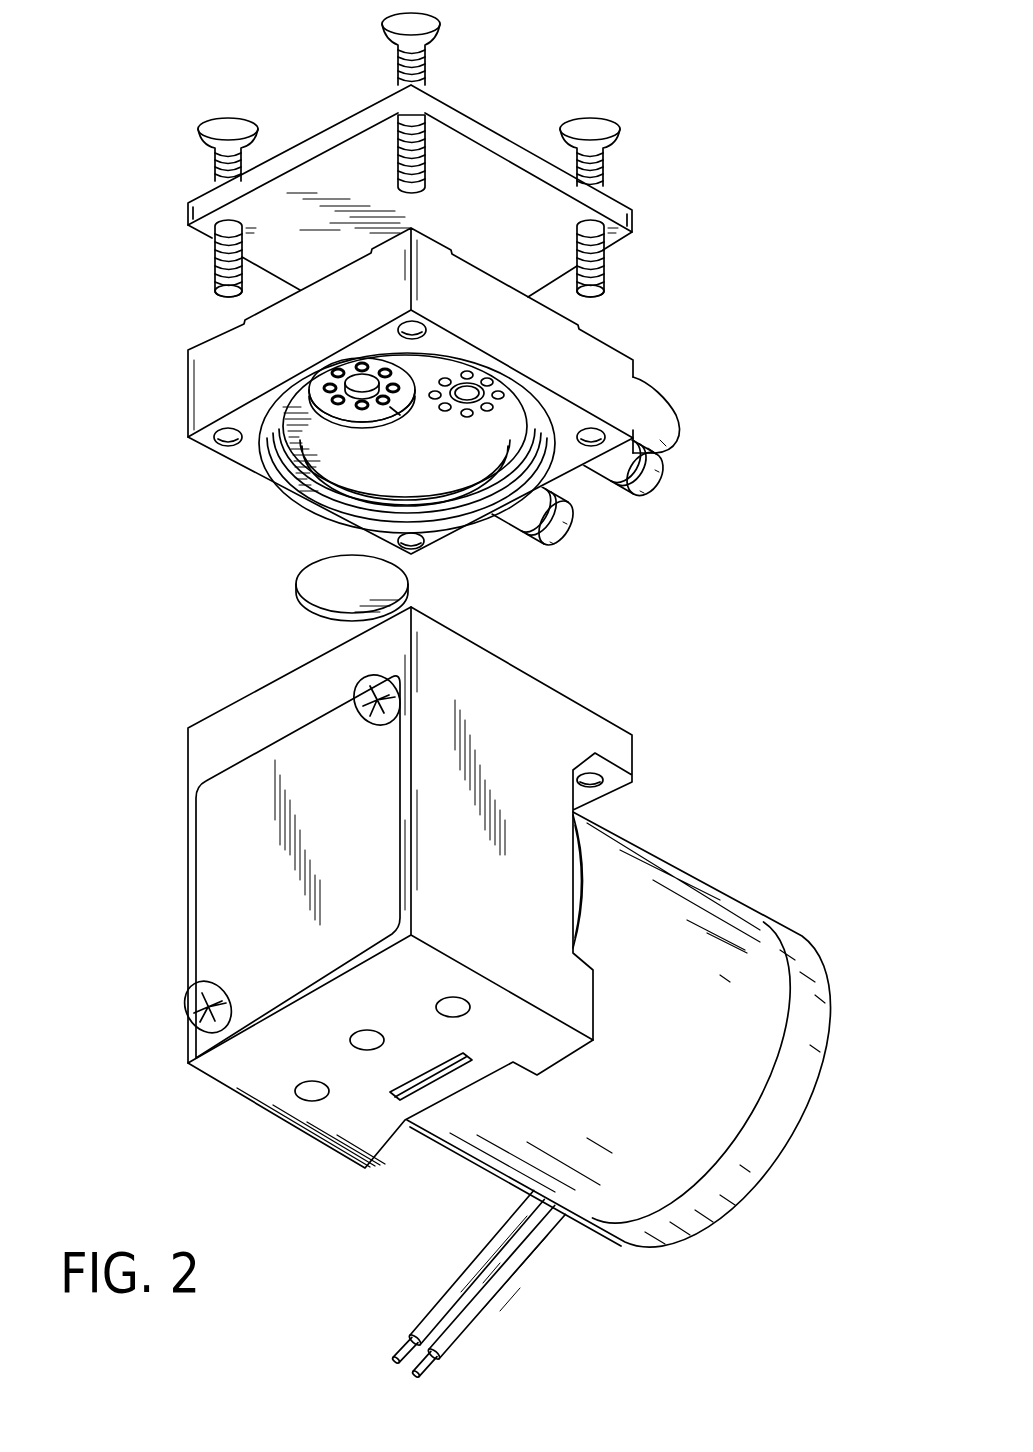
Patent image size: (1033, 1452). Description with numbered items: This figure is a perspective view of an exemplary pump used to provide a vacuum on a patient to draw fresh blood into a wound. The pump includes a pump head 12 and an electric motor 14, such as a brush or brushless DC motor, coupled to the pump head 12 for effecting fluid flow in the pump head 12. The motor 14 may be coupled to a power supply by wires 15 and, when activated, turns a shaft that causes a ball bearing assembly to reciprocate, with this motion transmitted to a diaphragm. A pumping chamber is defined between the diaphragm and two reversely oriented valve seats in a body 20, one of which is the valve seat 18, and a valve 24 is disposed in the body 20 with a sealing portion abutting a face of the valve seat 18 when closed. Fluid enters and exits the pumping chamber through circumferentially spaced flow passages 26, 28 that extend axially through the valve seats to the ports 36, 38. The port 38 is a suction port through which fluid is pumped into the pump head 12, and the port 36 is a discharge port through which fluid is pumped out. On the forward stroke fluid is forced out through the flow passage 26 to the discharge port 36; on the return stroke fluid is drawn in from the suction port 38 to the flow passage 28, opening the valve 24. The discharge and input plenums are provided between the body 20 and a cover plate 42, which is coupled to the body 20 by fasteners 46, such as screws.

The pump head 12 is at (238, 1090).
The electric motor 14 is at (735, 900).
The wires 15 is at (530, 1257).
The second valve seat 18 is at (345, 400).
The body 20 is at (345, 470).
The valve 24 is at (318, 600).
The flow passage 26 is at (500, 406).
The flow passage 28 is at (308, 390).
The discharge port 36 is at (653, 477).
The suction port 38 is at (572, 528).
The cover plate 42 is at (487, 130).
The fasteners 46 is at (603, 124).